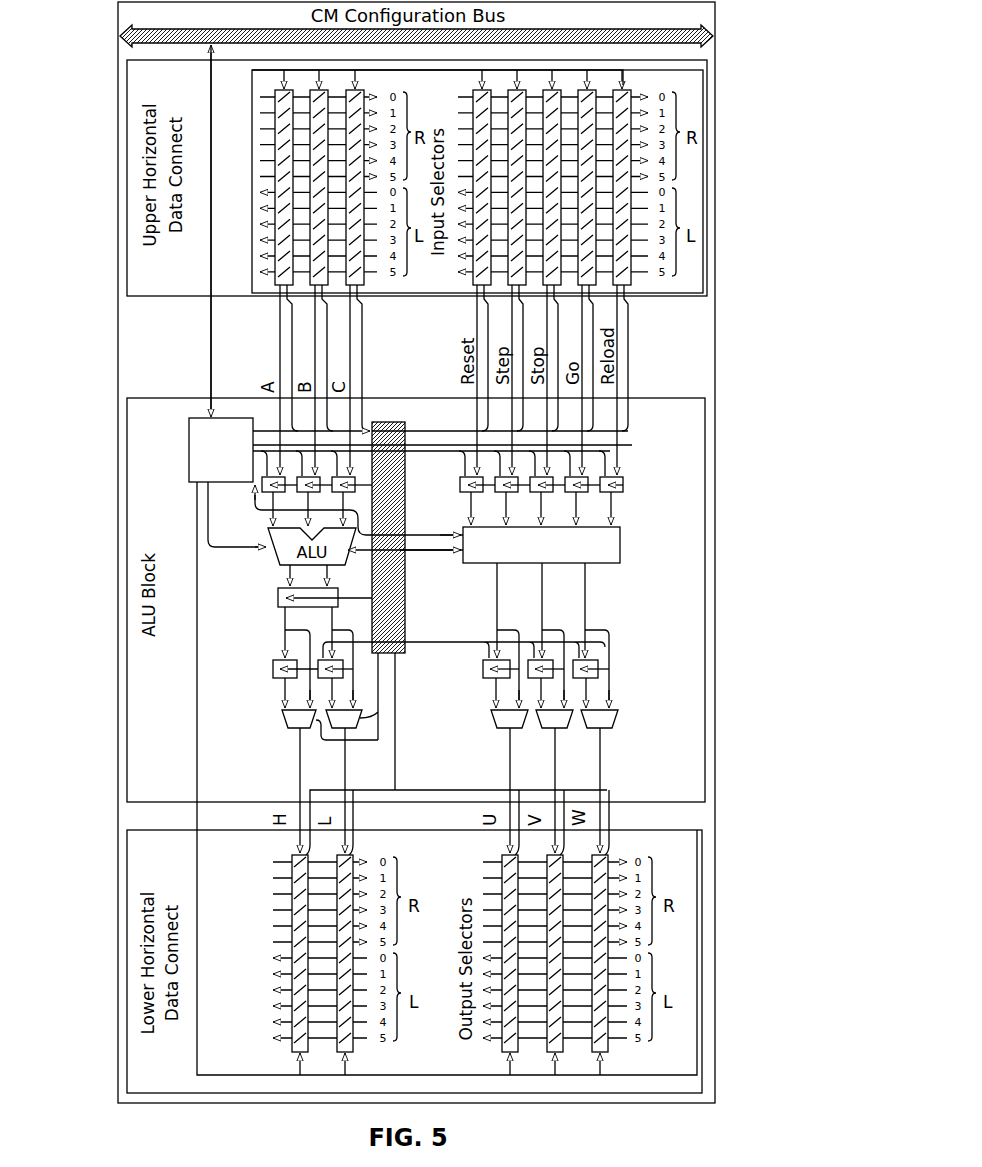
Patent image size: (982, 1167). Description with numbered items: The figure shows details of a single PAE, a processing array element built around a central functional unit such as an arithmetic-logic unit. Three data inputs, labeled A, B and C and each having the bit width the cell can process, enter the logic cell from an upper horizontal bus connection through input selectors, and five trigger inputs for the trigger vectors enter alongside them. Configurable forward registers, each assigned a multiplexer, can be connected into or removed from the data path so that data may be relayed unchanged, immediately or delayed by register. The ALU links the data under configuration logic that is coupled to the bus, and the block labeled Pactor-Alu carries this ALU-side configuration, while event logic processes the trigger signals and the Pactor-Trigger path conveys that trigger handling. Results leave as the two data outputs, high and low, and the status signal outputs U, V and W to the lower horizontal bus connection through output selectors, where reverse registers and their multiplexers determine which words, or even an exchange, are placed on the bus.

The pactor-alu Pactor-Alu is at (745, 550).
The pactor-trigger Pactor-Trigger is at (612, 563).